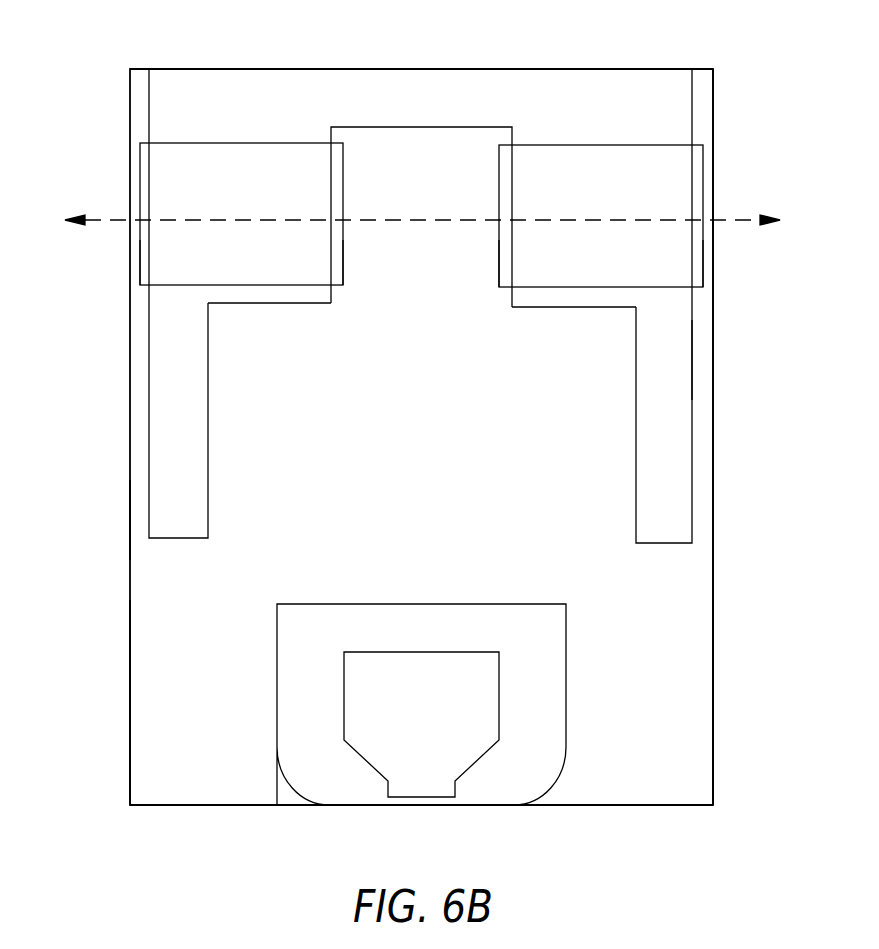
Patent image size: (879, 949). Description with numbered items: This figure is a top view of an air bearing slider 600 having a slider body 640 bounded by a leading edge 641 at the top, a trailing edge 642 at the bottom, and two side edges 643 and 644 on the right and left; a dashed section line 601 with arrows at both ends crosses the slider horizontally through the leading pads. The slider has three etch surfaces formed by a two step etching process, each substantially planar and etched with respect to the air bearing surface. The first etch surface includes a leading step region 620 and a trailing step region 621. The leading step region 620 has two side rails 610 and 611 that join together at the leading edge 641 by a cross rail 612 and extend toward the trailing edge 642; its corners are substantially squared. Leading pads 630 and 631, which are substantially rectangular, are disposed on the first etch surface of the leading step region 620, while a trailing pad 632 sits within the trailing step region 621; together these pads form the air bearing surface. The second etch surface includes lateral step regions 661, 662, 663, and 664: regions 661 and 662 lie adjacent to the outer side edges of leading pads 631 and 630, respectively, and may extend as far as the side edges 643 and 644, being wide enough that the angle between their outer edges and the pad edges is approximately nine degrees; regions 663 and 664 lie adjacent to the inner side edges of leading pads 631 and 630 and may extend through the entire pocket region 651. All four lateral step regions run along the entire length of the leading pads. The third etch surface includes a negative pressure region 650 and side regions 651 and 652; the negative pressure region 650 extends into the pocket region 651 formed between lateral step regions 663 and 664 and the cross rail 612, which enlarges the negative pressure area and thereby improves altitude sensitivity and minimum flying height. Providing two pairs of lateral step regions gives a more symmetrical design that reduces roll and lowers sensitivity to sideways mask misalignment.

The air bearing slider 600 is at (817, 77).
The section line 601 is at (100, 218).
The side rail 610 is at (646, 460).
The side rail 611 is at (159, 460).
The cross rail 612 is at (408, 115).
The leading step region 620 is at (680, 369).
The trailing step region 621 is at (436, 643).
The leading pad 630 is at (218, 206).
The leading pad 631 is at (584, 206).
The trailing pad 632 is at (401, 728).
The slider body 640 is at (713, 102).
The leading edge 641 is at (455, 68).
The trailing edge 642 is at (241, 806).
The side edge 643 is at (713, 773).
The side edge 644 is at (129, 777).
The negative pressure region 650 is at (408, 420).
The pocket region 651 is at (401, 195).
The side region 652 is at (132, 527).
The lateral step region 661 is at (700, 270).
The lateral step region 662 is at (140, 262).
The lateral step region 663 is at (500, 268).
The lateral step region 664 is at (343, 266).